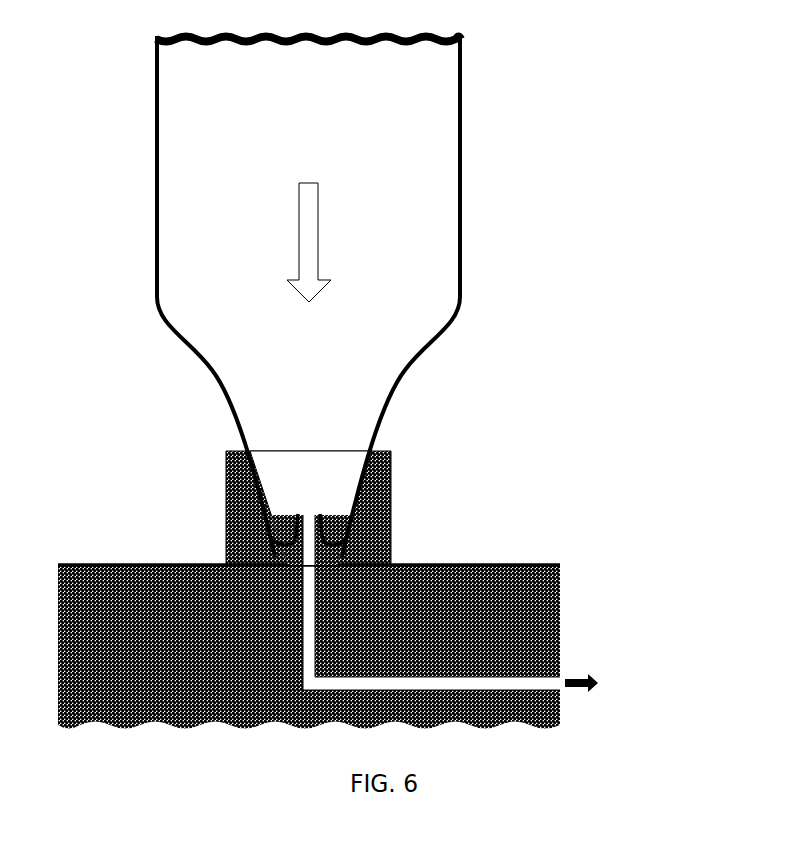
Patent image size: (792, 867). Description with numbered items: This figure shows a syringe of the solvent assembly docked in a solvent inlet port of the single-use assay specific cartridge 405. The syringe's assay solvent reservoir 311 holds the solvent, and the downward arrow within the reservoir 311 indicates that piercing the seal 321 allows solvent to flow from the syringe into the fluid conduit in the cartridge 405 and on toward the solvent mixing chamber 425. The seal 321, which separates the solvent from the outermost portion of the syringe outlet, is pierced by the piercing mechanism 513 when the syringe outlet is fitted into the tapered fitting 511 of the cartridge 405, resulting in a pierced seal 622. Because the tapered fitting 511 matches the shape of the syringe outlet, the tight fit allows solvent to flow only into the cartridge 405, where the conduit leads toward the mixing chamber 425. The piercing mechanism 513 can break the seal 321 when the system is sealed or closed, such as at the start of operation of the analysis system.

The reservoir 311 is at (290, 96).
The tapered fitting 511 is at (342, 481).
The piercing mechanism 513 is at (347, 535).
The seal 321 is at (270, 537).
The pierced seal 622 is at (295, 517).
The single-use assay specific cartridge 405 is at (480, 620).
The solvent mixing chamber 425 is at (677, 685).